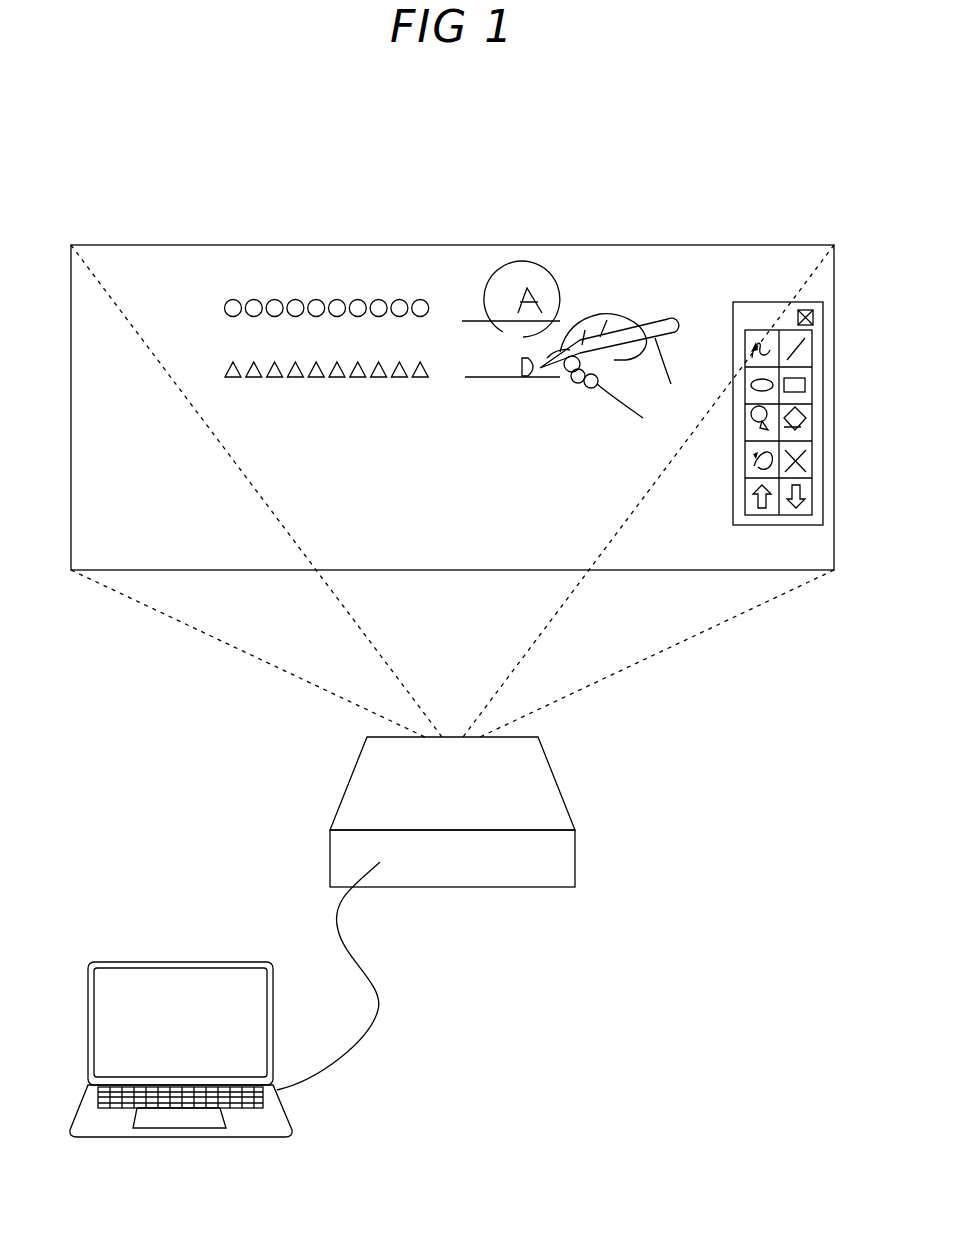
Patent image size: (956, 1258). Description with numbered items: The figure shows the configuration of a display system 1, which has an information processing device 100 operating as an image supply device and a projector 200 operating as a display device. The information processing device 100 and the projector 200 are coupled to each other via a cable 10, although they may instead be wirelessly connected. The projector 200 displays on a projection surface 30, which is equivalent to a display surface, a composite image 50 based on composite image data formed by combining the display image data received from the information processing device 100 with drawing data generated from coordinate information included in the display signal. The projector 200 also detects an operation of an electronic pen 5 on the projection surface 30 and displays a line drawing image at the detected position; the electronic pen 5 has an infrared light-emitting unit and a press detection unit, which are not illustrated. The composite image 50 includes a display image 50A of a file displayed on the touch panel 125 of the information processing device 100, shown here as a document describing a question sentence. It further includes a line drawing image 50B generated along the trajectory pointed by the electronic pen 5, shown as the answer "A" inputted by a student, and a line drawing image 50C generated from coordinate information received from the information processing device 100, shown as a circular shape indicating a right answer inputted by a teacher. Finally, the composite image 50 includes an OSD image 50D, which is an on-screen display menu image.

The display system 1 is at (566, 1012).
The electronic pen 5 is at (554, 382).
The cable 10 is at (352, 958).
The projection surface 30 is at (260, 245).
The composite image 50 is at (488, 180).
The display image 50A is at (359, 282).
The line drawing image 50B is at (542, 286).
The line drawing image 50C is at (504, 268).
The OSD image 50D is at (757, 302).
The information processing device 100 is at (162, 1033).
The touch panel 125 is at (118, 1020).
The projector 200 is at (553, 776).